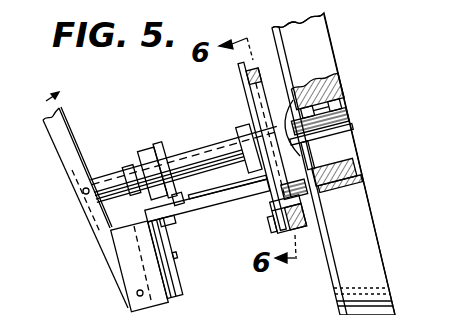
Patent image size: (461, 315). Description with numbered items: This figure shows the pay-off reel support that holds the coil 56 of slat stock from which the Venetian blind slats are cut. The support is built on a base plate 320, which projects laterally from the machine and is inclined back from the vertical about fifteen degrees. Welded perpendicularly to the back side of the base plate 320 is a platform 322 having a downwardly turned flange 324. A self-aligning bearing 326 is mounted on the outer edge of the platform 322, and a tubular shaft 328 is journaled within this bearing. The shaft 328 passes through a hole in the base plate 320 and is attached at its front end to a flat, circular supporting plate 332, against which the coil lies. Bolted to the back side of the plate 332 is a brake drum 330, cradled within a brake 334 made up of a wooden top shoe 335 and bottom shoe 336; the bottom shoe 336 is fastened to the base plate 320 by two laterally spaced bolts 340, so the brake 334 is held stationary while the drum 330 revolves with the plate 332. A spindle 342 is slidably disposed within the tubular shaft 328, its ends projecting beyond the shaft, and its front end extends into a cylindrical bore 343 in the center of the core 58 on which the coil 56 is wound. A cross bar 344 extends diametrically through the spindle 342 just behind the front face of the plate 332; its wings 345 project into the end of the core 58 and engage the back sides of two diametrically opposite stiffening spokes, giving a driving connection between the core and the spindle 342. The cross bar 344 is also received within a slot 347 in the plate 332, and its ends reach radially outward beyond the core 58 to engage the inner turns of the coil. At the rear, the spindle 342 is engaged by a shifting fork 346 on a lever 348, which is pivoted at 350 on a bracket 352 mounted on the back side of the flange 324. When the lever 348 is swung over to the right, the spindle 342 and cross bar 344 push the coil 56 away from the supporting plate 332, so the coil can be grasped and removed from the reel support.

The brake drum 330 is at (283, 50).
The supporting plate 332 is at (336, 272).
The top shoe 335 is at (283, 35).
The bottom shoe 336 is at (347, 206).
The wings 345 is at (338, 78).
The core 58 is at (332, 105).
The cylindrical bore 343 is at (345, 120).
The spindle 342 is at (351, 130).
The coil of slat stock 56 is at (362, 176).
The base plate 320 is at (243, 86).
The brake 334 is at (259, 58).
The bolts 340 is at (267, 229).
The tubular shaft 328 is at (218, 147).
The self-aligning bearing 326 is at (155, 145).
The platform 322 is at (228, 206).
The cross bar 344 is at (266, 180).
The slot 347 is at (280, 186).
The flange 324 is at (158, 248).
The bracket 352 is at (135, 244).
The pivot 350 is at (137, 293).
The lever 348 is at (60, 121).
The shifting fork 346 is at (84, 195).